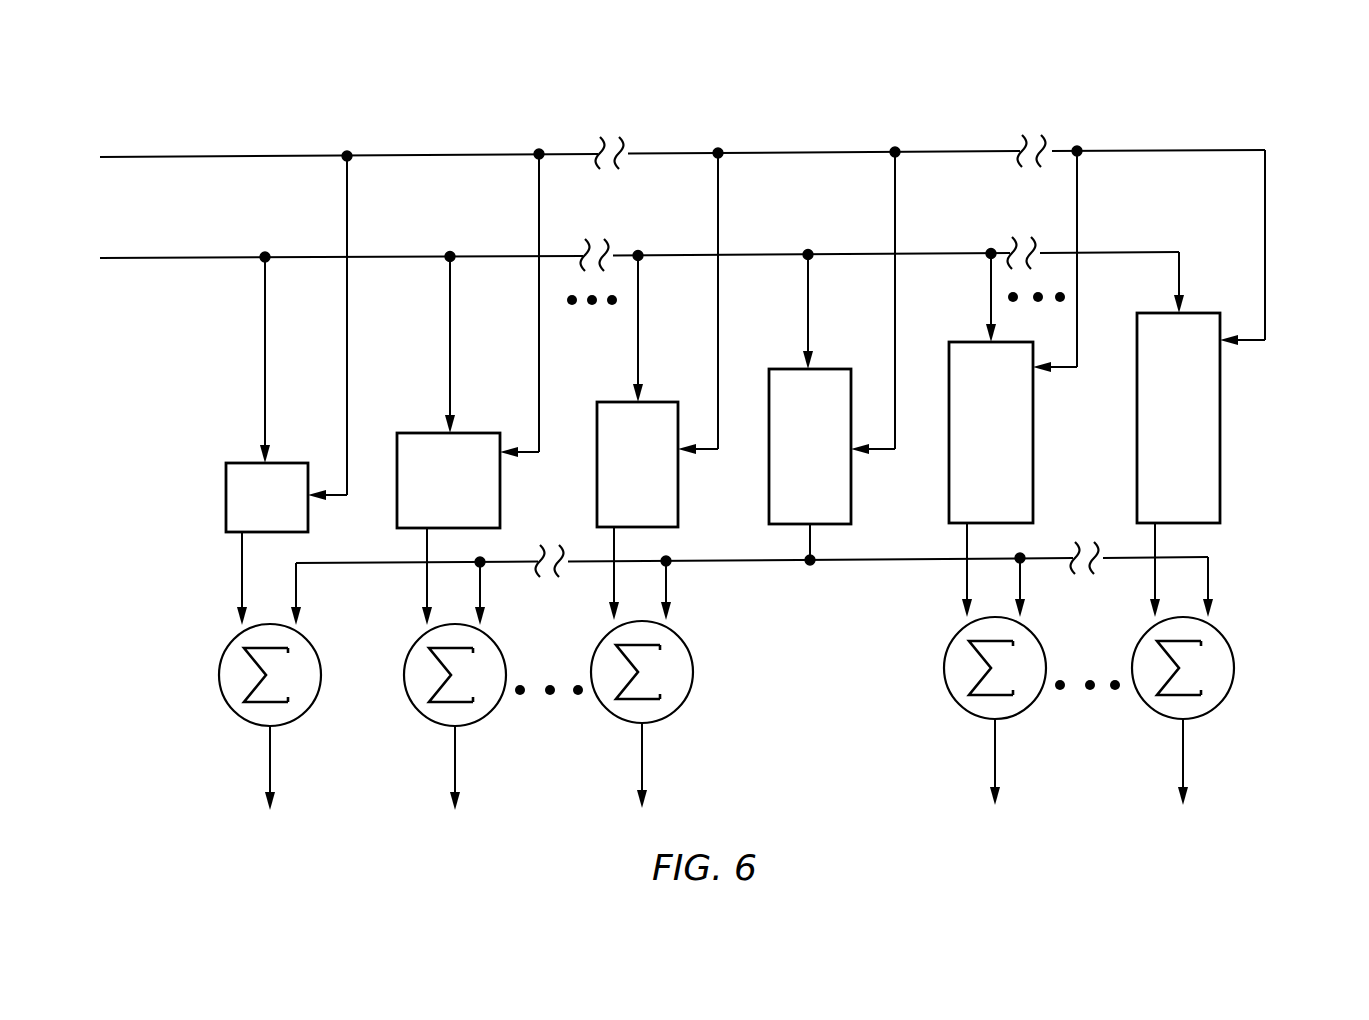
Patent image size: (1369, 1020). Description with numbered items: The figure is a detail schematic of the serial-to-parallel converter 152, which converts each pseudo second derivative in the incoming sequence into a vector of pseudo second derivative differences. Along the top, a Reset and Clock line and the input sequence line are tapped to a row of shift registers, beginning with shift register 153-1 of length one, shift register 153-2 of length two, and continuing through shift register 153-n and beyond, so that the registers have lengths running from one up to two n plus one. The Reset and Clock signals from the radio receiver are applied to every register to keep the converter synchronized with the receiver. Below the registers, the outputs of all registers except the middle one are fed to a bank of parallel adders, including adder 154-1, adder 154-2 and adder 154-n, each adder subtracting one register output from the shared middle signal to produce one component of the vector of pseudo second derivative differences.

The serial-to-parallel converter 152 is at (950, 92).
The shift register 153-1 is at (226, 463).
The shift register 153-2 is at (420, 433).
The shift register 153-n is at (616, 402).
The adder 154-1 is at (300, 712).
The adder 154-2 is at (486, 712).
The adder 154-n is at (672, 709).